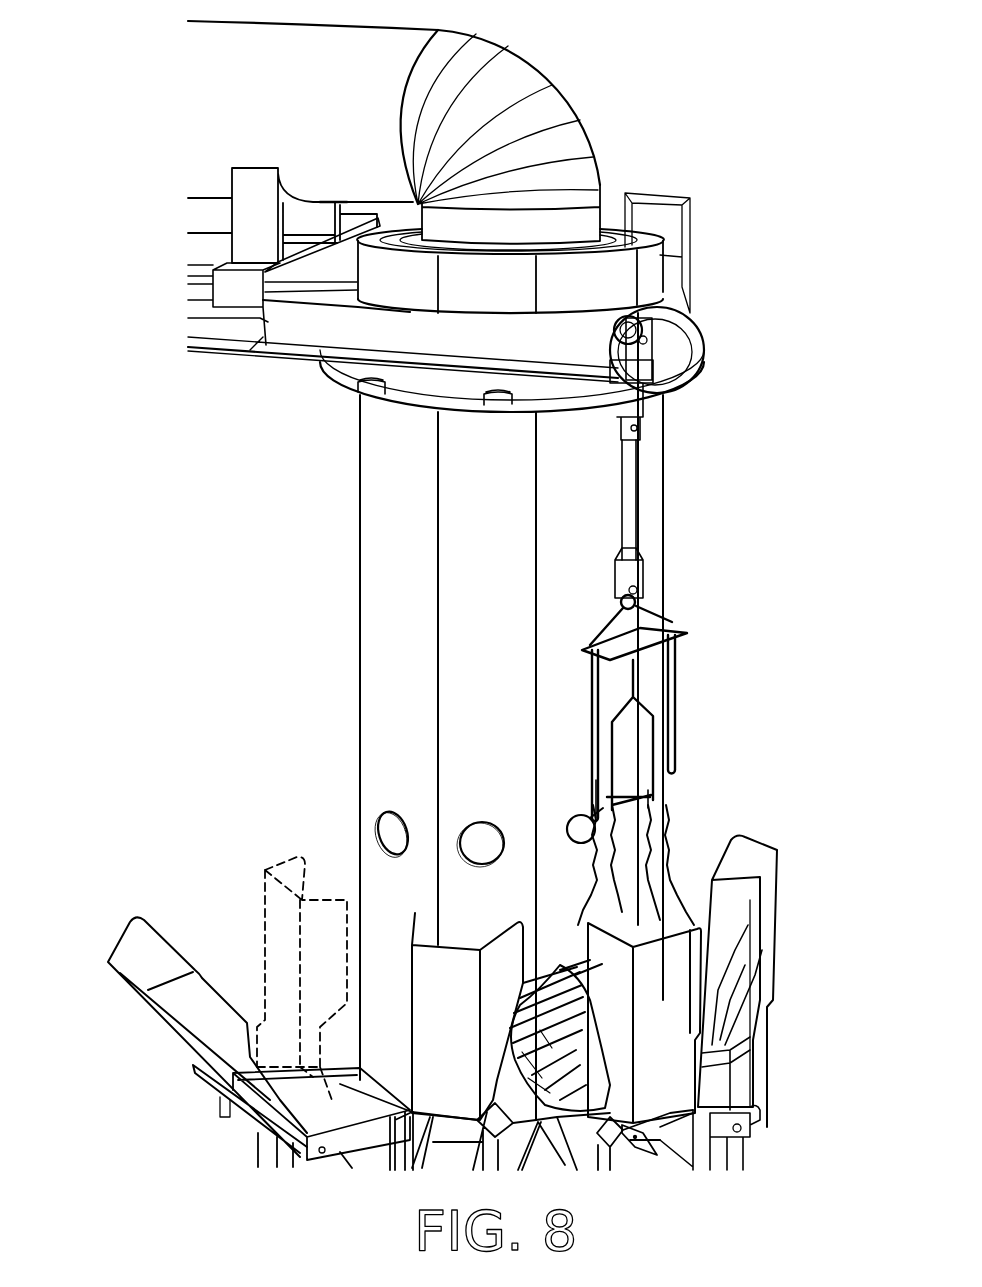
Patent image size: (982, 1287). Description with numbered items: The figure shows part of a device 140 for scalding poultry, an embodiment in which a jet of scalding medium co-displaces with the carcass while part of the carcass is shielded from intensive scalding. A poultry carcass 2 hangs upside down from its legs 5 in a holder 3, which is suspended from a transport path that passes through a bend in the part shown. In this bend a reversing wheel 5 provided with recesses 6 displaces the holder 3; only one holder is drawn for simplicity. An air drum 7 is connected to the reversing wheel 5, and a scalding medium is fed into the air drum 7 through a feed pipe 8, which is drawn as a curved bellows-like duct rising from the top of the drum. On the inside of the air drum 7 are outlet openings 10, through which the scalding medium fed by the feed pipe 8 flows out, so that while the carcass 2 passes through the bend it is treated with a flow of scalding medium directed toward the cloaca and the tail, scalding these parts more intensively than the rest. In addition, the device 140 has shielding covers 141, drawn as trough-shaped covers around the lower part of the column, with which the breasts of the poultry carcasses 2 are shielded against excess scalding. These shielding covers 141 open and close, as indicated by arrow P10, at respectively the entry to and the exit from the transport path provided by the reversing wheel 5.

The poultry carcass 2 is at (695, 870).
The holder 3 is at (676, 702).
The reversing wheel 5 is at (685, 360).
The recesses 6 is at (368, 403).
The air drum 7 is at (395, 627).
The feed pipe 8 is at (558, 108).
The outlet openings 10 is at (390, 820).
The device 140 is at (265, 552).
The shielding covers 141 is at (160, 1013).
The arrow indicating opening and closing of shielding covers P10 is at (246, 896).